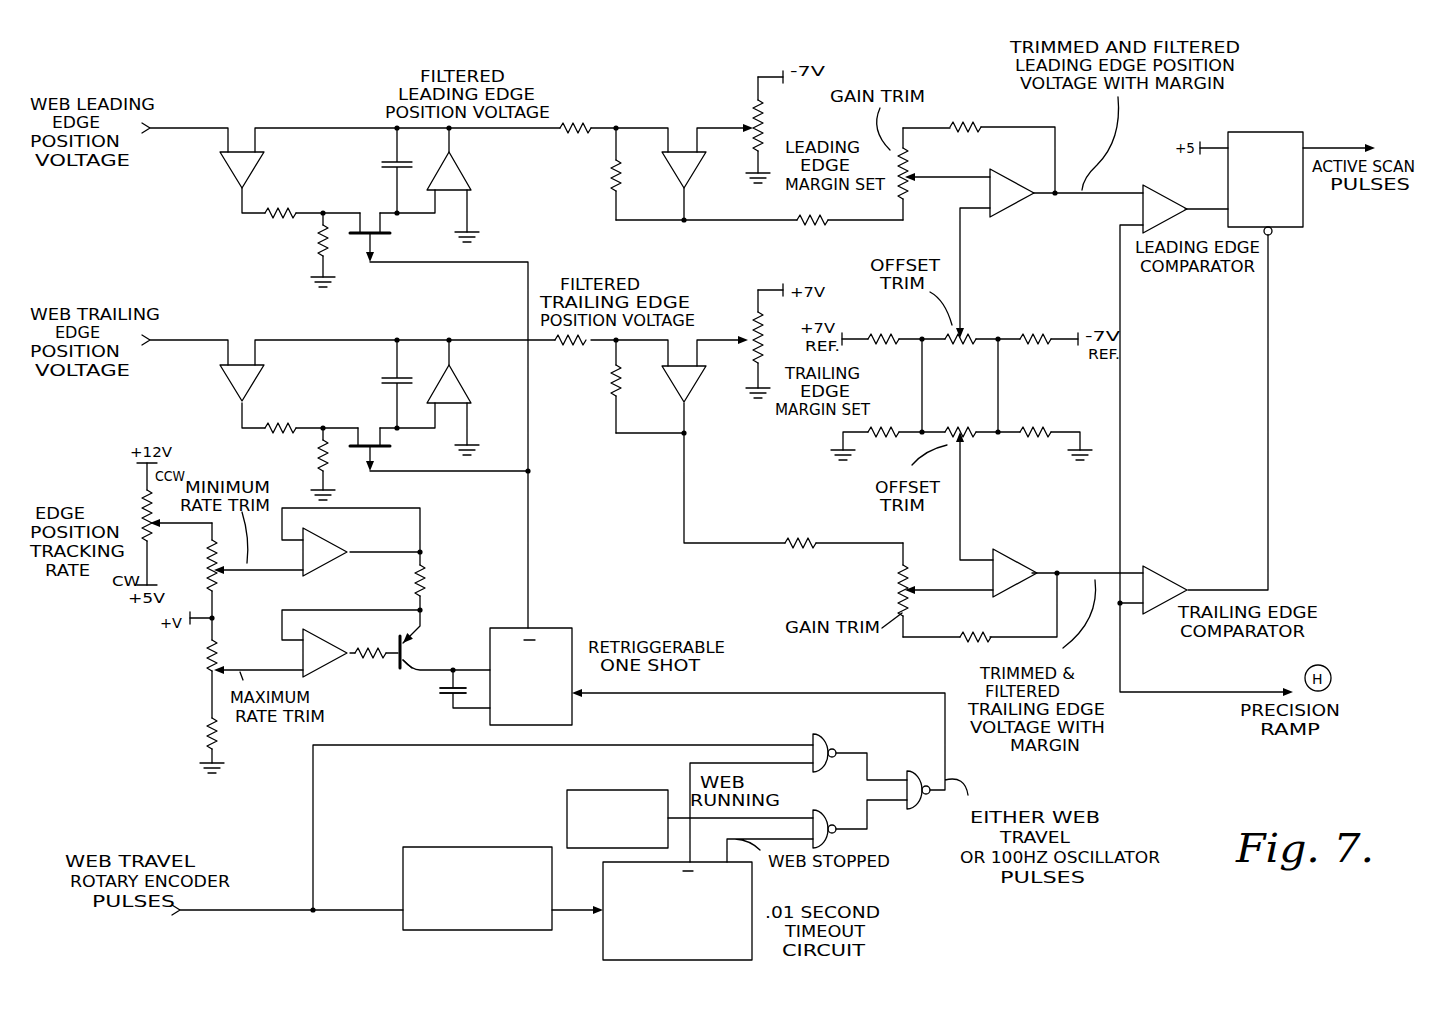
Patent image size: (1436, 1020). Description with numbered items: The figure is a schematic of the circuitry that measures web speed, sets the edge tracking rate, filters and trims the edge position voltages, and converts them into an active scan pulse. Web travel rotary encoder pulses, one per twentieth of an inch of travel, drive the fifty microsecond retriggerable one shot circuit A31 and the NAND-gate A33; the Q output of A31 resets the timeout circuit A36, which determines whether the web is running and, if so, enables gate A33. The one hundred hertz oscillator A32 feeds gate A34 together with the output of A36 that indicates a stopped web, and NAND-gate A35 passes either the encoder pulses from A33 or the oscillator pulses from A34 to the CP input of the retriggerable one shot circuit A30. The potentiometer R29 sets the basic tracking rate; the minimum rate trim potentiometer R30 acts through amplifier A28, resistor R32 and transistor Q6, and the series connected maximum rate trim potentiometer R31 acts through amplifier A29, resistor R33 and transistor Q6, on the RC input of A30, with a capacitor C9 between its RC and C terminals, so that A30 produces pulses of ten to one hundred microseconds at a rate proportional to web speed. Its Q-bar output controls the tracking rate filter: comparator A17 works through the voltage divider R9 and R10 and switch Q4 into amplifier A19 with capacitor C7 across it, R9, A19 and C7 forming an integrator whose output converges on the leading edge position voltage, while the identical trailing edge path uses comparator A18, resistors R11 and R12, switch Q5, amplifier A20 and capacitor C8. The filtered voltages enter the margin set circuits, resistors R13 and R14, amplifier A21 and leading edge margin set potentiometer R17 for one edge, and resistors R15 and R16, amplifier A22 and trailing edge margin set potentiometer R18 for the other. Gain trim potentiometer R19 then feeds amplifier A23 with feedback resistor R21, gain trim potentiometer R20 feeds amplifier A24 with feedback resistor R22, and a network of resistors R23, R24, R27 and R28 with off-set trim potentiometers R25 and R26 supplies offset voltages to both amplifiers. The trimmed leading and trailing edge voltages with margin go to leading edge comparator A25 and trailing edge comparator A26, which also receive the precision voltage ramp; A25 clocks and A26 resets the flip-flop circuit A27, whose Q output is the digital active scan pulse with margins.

The comparator A17 is at (230, 170).
The comparator A18 is at (230, 383).
The amplifier A19 is at (471, 171).
The amplifier A20 is at (471, 384).
The amplifier A21 is at (698, 172).
The amplifier A22 is at (698, 386).
The amplifier A23 is at (1022, 195).
The amplifier A24 is at (1024, 568).
The leading edge comparator A25 is at (1179, 209).
The trailing edge comparator A26 is at (1171, 584).
The flip-flop circuit A27 is at (1265, 174).
The amplifier A28 is at (335, 551).
The amplifier A29 is at (329, 649).
The retriggerable one shot circuit A30 is at (537, 667).
The retriggerable one shot circuit A31 is at (477, 879).
The 100Hz oscillator A32 is at (617, 808).
The NAND-gate A33 is at (839, 745).
The NAND-gate A34 is at (839, 839).
The NAND-gate A35 is at (922, 781).
The timeout circuit A36 is at (660, 911).
The resistor R9 is at (285, 216).
The resistor R10 is at (338, 250).
The resistor R11 is at (285, 430).
The resistor R12 is at (338, 464).
The resistor R13 is at (583, 128).
The resistor R14 is at (601, 174).
The resistor R15 is at (573, 357).
The resistor R16 is at (633, 386).
The leading edge margin set potentiometer R17 is at (780, 125).
The trailing edge margin set potentiometer R18 is at (745, 339).
The gain trim potentiometer R19 is at (876, 186).
The gain trim potentiometer R20 is at (846, 587).
The feedback resistor R21 is at (973, 121).
The feedback resistor R22 is at (981, 635).
The resistor R23 is at (887, 336).
The resistor R24 is at (889, 433).
The off-set trim potentiometer R25 is at (965, 358).
The off-set trim potentiometer R26 is at (968, 430).
The resistor R27 is at (1042, 336).
The resistor R28 is at (1037, 431).
The potentiometer R29 is at (133, 524).
The minimum rate trim potentiometer R30 is at (196, 570).
The maximum rate trim potentiometer R31 is at (194, 695).
The resistor R32 is at (443, 581).
The resistor R33 is at (372, 653).
The capacitor C7 is at (387, 170).
The capacitor C8 is at (387, 384).
The capacitor C9 is at (435, 698).
The switch Q4 is at (385, 237).
The switch Q5 is at (385, 449).
The transistor Q6 is at (426, 639).